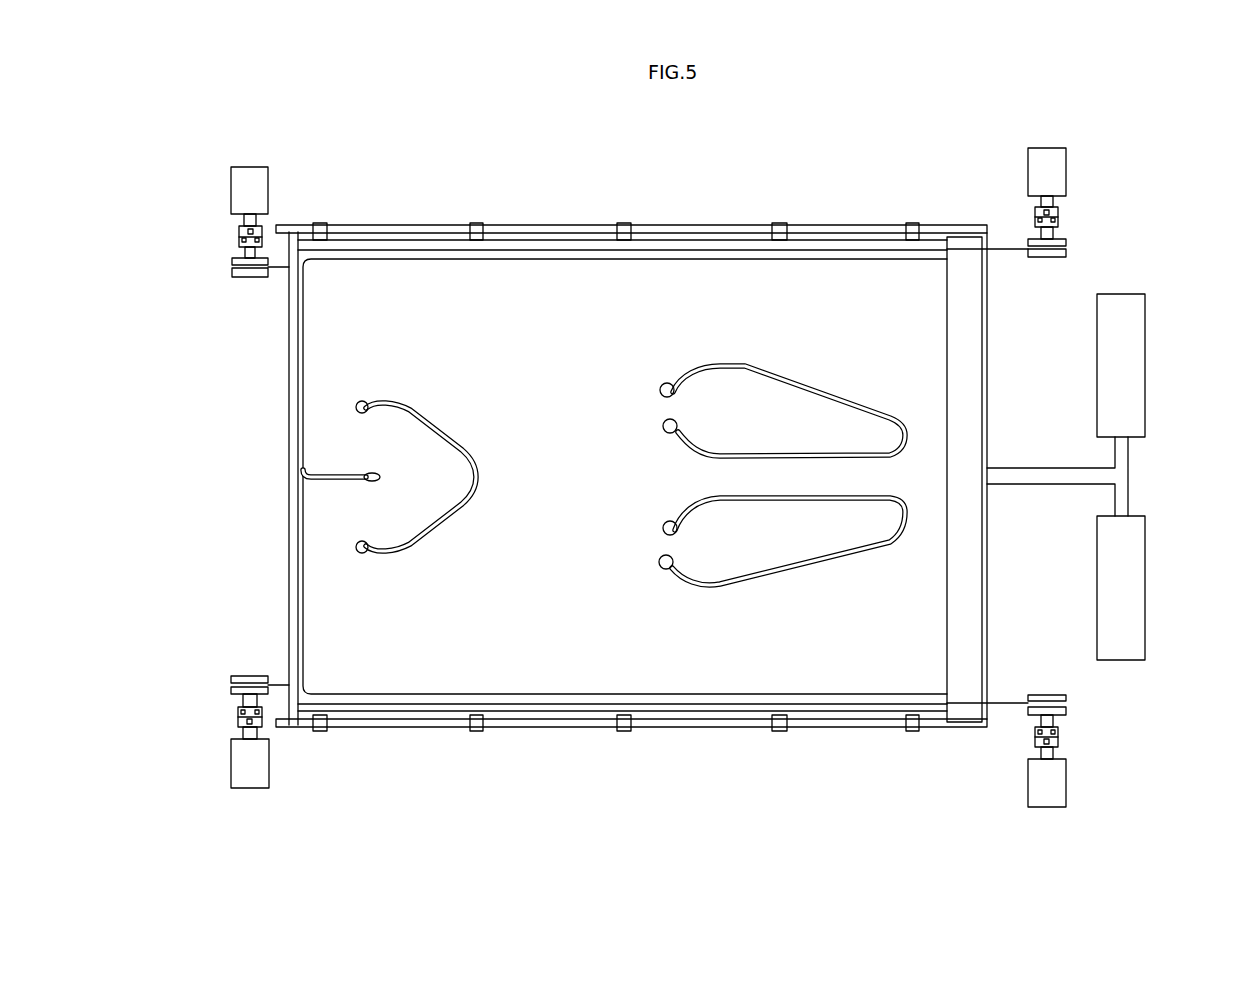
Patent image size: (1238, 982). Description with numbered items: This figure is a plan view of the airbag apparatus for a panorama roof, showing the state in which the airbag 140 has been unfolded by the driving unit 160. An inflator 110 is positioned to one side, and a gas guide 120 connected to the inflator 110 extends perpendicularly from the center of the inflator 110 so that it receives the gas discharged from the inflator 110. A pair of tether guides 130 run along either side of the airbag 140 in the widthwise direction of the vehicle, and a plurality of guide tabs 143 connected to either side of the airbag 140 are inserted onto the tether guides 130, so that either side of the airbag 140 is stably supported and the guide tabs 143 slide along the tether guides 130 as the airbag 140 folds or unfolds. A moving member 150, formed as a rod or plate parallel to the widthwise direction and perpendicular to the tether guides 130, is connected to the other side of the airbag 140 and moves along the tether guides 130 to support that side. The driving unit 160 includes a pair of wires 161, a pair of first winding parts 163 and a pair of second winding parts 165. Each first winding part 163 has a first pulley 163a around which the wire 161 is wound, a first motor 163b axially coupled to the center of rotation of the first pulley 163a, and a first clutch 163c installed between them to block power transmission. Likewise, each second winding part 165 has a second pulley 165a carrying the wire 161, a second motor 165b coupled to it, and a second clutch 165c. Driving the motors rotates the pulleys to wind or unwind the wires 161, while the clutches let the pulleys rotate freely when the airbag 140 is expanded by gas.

The inflator 110 is at (1133, 320).
The gas guide 120 is at (1057, 477).
The tether guide 130 is at (571, 232).
The airbag 140 is at (416, 283).
The guide tab 143 is at (773, 225).
The moving member 150 is at (290, 528).
The driving unit 160 is at (1059, 477).
The wire 161 is at (278, 687).
The first winding part 163 is at (1065, 477).
The first pulley 163a is at (1066, 243).
The first motor 163b is at (1058, 171).
The first clutch 163c is at (1058, 211).
The second winding part 165 is at (198, 477).
The second pulley 165a is at (221, 265).
The second motor 165b is at (245, 188).
The second clutch 165c is at (243, 232).